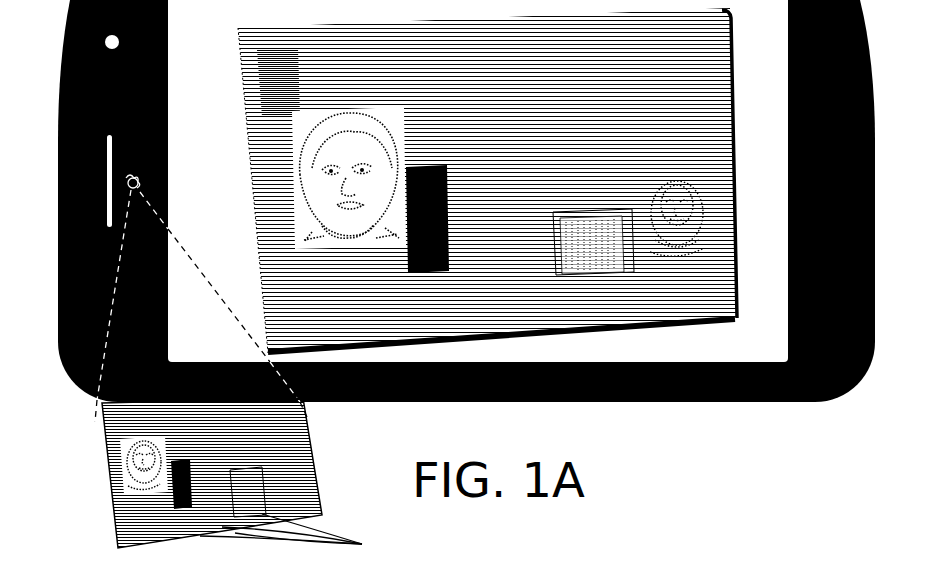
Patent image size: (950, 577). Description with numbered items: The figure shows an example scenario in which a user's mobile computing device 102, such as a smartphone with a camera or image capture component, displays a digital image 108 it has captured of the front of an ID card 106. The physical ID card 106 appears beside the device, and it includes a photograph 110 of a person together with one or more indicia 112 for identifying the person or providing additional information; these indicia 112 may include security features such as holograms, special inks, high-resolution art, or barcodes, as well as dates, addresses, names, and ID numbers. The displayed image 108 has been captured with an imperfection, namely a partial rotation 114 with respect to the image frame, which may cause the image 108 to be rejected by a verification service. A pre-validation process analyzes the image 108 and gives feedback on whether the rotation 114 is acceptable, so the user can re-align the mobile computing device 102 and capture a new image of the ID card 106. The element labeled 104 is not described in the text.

The mobile computing device 102 is at (757, 403).
The camera 104 is at (109, 178).
The ID card 106 is at (303, 480).
The digital image 108 is at (582, 327).
The photograph 110 is at (140, 477).
The indicia 112 is at (301, 536).
The partial rotation 114 is at (337, 0).